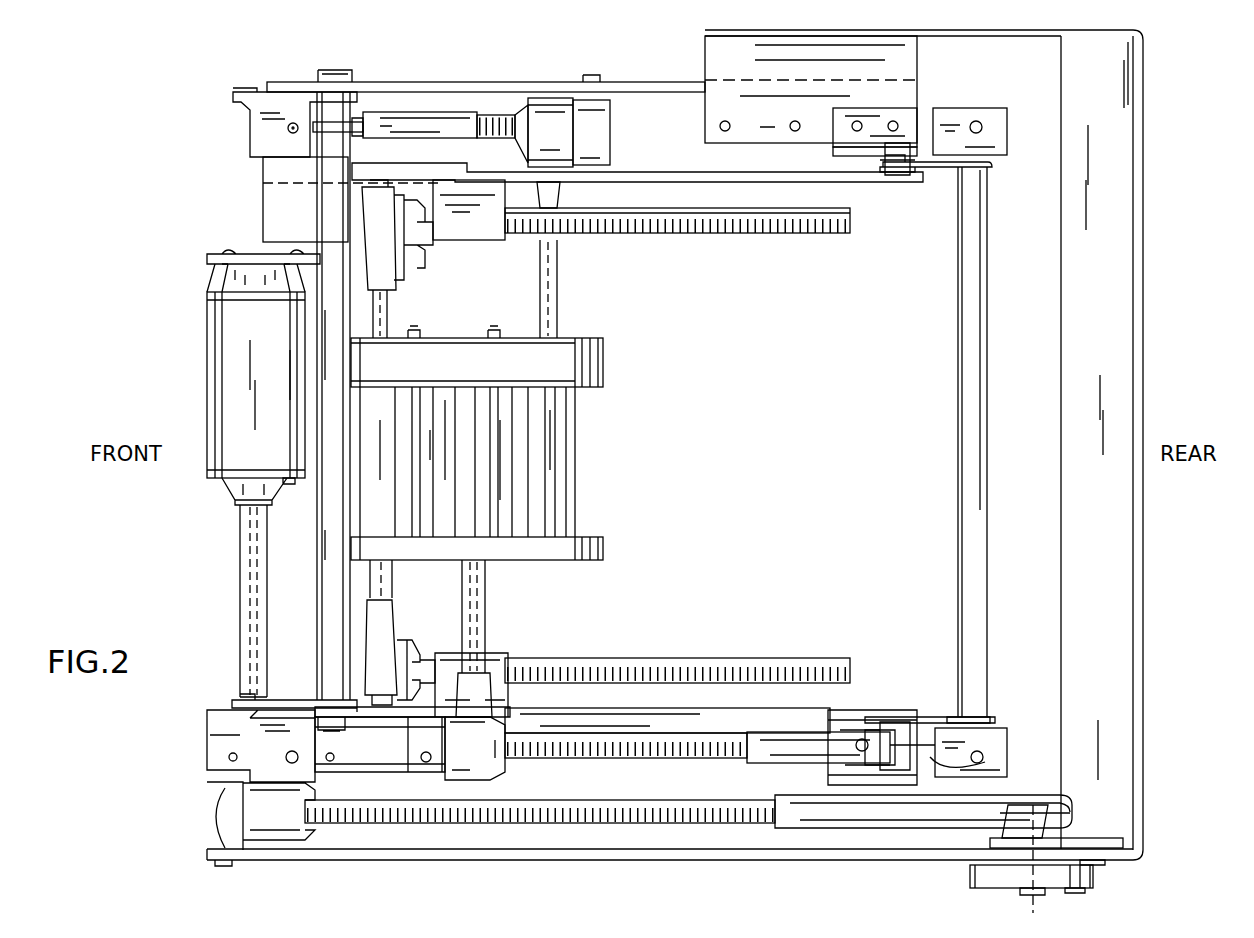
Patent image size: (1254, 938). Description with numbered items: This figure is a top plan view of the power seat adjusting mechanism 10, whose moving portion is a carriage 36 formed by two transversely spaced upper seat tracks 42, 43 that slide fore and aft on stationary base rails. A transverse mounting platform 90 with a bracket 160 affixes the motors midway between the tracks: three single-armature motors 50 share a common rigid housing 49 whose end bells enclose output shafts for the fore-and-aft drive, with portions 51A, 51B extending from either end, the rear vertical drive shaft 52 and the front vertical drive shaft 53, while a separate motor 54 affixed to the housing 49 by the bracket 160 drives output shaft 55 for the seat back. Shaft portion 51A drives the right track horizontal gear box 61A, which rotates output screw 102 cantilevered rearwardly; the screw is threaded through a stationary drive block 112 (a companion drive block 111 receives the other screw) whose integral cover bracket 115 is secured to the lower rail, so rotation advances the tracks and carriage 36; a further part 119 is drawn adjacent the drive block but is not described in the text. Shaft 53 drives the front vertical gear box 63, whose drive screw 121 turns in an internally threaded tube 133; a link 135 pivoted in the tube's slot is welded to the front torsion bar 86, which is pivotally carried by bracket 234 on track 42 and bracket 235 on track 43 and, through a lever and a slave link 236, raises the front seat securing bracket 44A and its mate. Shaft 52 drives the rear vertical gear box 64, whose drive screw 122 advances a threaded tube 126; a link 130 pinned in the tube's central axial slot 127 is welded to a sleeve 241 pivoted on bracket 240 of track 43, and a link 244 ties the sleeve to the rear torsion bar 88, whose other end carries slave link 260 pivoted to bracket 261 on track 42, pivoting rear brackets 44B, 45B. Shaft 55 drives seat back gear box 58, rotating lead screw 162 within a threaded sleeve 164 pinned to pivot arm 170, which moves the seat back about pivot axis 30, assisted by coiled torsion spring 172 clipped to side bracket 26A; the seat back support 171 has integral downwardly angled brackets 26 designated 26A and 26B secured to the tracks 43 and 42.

The mechanism 10 is at (792, 462).
The downwardly angled bracket 26 is at (712, 57).
The side bracket 26A is at (771, 860).
The downwardly angled bracket 26B is at (958, 31).
The pivot axis 30 is at (1038, 905).
The carriage 36 is at (946, 440).
The upper seat track 42 is at (825, 172).
The upper seat track 43 is at (690, 716).
The front seat securing bracket 44A is at (255, 130).
The rear seat securing bracket 44B is at (992, 118).
The rear seat securing bracket 45B is at (1003, 742).
The common rigid housing 49 is at (605, 372).
The single-armature motor 50 is at (387, 400).
The shaft portion 51A is at (387, 580).
The shaft portion 51B is at (387, 305).
The output drive shaft 52 is at (487, 592).
The output drive shaft 53 is at (558, 298).
The separate motor 54 is at (210, 385).
The output shaft 55 is at (238, 550).
The seat back gear box 58 is at (270, 830).
The right track horizontal gear box 61A is at (392, 240).
The front vertical gear box 63 is at (548, 110).
The rear vertical gear box 64 is at (508, 735).
The front torsion bar 86 is at (320, 620).
The rear torsion bar 88 is at (985, 336).
The mounting platform 90 is at (270, 207).
The output screw 102 is at (779, 230).
The drive block 111 is at (505, 662).
The drive block 112 is at (481, 212).
The cover bracket 115 is at (510, 700).
The pin 119 is at (560, 186).
The drive screw 121 is at (490, 138).
The drive screw 122 is at (605, 738).
The internally threaded tube 126 is at (775, 765).
The central axial slot 127 is at (855, 735).
The link 130 is at (1000, 765).
The internally threaded tube 133 is at (395, 138).
The link 135 is at (348, 122).
The bracket 160 is at (235, 254).
The lead screw 162 is at (405, 823).
The internally threaded tubular sleeve 164 is at (912, 826).
The pivot arm 170 is at (1105, 838).
The seat back support 171 is at (1145, 347).
The coiled torsion spring 172 is at (1095, 880).
The bracket 234 is at (283, 82).
The bracket 235 is at (370, 720).
The slave link 236 is at (283, 700).
The bracket 240 is at (840, 712).
The sleeve 241 is at (895, 735).
The link 244 is at (940, 715).
The slave link 260 is at (940, 168).
The bracket 261 is at (875, 158).